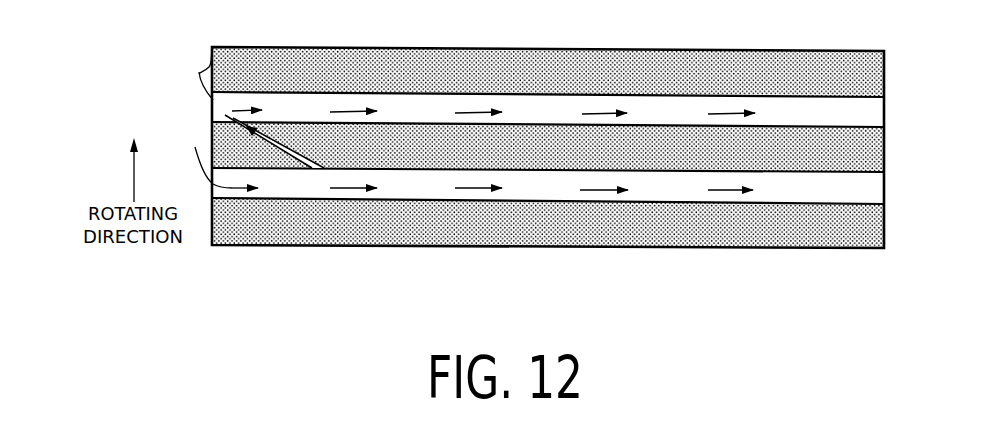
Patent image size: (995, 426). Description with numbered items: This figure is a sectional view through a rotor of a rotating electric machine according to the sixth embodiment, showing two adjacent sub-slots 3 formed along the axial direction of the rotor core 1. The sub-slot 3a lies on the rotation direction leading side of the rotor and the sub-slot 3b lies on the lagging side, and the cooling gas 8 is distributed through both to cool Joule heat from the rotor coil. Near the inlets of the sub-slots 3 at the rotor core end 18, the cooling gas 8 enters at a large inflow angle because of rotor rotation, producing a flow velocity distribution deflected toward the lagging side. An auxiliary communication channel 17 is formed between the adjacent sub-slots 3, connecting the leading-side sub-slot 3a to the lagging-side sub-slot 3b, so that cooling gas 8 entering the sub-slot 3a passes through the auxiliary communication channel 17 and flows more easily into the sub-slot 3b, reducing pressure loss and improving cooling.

The rotor core 1 is at (820, 72).
The sub-slot 3 is at (664, 103).
The sub-slot on the rotation direction leading side 3a is at (232, 111).
The sub-slot on the rotation direction lagging side 3b is at (224, 189).
The cooling gas 8 is at (354, 110).
The auxiliary communication channel 17 is at (212, 139).
The rotor core end 18 is at (213, 48).